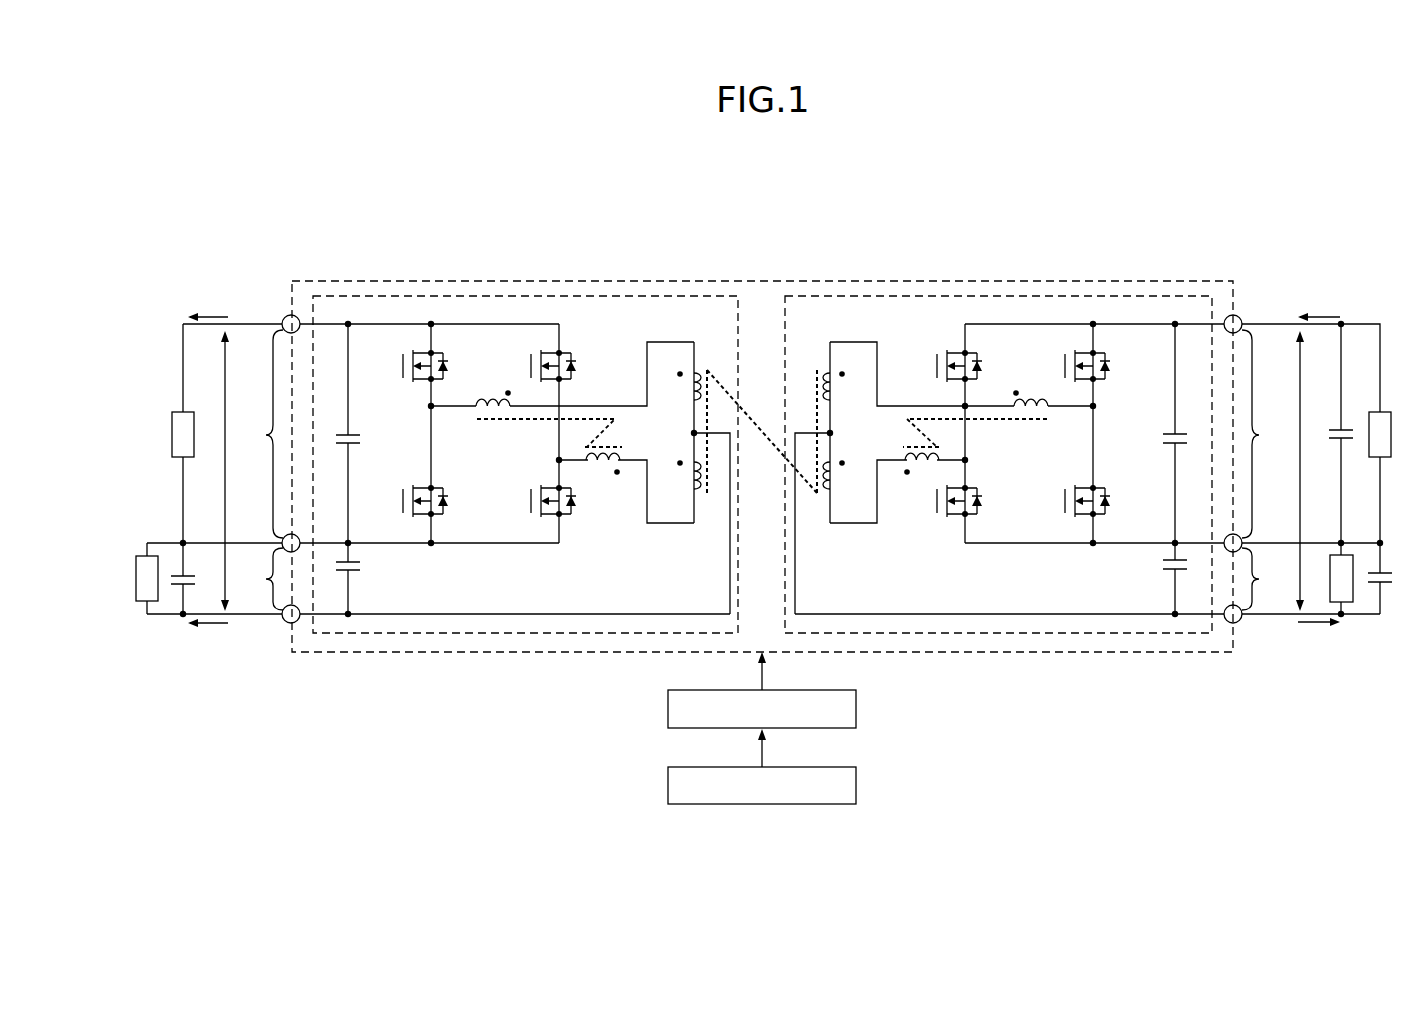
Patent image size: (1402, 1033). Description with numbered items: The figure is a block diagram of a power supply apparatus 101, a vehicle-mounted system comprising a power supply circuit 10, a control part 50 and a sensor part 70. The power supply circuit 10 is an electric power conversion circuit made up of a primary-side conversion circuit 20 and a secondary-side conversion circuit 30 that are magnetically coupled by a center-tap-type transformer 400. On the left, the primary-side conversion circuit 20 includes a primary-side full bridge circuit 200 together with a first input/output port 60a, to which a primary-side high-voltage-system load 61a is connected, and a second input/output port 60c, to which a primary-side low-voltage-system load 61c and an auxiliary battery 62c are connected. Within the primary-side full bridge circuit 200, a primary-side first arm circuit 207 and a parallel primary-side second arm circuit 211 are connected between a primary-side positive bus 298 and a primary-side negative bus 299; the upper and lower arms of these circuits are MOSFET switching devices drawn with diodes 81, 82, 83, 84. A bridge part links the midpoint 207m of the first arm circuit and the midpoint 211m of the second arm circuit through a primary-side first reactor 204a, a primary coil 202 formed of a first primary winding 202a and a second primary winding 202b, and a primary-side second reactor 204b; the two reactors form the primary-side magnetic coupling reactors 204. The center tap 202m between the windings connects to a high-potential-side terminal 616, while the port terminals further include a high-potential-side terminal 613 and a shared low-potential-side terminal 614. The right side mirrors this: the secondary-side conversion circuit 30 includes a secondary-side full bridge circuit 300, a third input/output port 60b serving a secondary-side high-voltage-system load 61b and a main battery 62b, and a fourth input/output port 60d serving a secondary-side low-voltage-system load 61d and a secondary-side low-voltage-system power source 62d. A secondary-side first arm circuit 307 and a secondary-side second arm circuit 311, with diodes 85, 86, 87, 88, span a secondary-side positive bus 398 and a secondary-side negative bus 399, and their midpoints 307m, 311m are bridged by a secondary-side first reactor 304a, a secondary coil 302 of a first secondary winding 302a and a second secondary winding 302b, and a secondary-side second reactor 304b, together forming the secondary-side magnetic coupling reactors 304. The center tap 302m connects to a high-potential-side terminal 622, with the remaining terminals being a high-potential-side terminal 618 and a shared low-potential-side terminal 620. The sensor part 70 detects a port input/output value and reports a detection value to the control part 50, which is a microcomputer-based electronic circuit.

The power supply apparatus 101 is at (272, 222).
The power supply circuit 10 is at (1125, 281).
The primary-side conversion circuit 20 is at (517, 286).
The secondary-side conversion circuit 30 is at (1007, 286).
The primary-side full bridge circuit 200 is at (600, 296).
The secondary-side full bridge circuit 300 is at (920, 296).
The primary coil 202 is at (694, 338).
The first primary winding 202a is at (686, 388).
The second primary winding 202b is at (682, 492).
The center tap 202m is at (690, 433).
The secondary coil 302 is at (830, 338).
The first secondary winding 302a is at (838, 389).
The second secondary winding 302b is at (838, 492).
The center tap 302m is at (836, 433).
The transformer 400 is at (765, 409).
The primary-side magnetic coupling reactors 204 is at (545, 416).
The primary-side first reactor 204a is at (490, 402).
The primary-side second reactor 204b is at (612, 477).
The secondary-side magnetic coupling reactors 304 is at (1002, 416).
The secondary-side first reactor 304a is at (1022, 403).
The secondary-side second reactor 304b is at (920, 478).
The primary-side first arm circuit 207 is at (416, 523).
The midpoint 207m is at (425, 406).
The primary-side second arm circuit 211 is at (545, 523).
The midpoint 211m is at (556, 460).
The secondary-side first arm circuit 307 is at (1063, 523).
The midpoint 307m is at (1097, 405).
The secondary-side second arm circuit 311 is at (942, 523).
The midpoint 311m is at (970, 462).
The diode 81 is at (446, 364).
The diode 82 is at (448, 504).
The diode 83 is at (574, 364).
The diode 84 is at (575, 506).
The diode 85 is at (980, 364).
The diode 86 is at (980, 505).
The diode 87 is at (1106, 364).
The diode 88 is at (1106, 500).
The primary-side positive bus 298 is at (388, 324).
The primary-side negative bus 299 is at (378, 548).
The secondary-side positive bus 398 is at (1118, 324).
The secondary-side negative bus 399 is at (1150, 548).
The high-potential-side terminal 613 is at (283, 321).
The low-potential-side terminal 614 is at (300, 537).
The high-potential-side terminal 616 is at (286, 624).
The high-potential-side terminal 618 is at (1242, 321).
The low-potential-side terminal 620 is at (1226, 537).
The high-potential-side terminal 622 is at (1238, 624).
The first input/output port 60a is at (235, 452).
The third input/output port 60b is at (1291, 452).
The second input/output port 60c is at (235, 597).
The fourth input/output port 60d is at (1291, 597).
The primary-side high-voltage-system load 61a is at (190, 411).
The secondary-side high-voltage-system load 61b is at (1374, 411).
The primary-side low-voltage-system load 61c is at (152, 620).
The secondary-side low-voltage-system load 61d is at (1348, 603).
The main battery 62b is at (1338, 446).
The auxiliary battery 62c is at (180, 571).
The secondary-side low-voltage-system power source 62d is at (1386, 586).
The control part 50 is at (857, 708).
The sensor part 70 is at (857, 785).